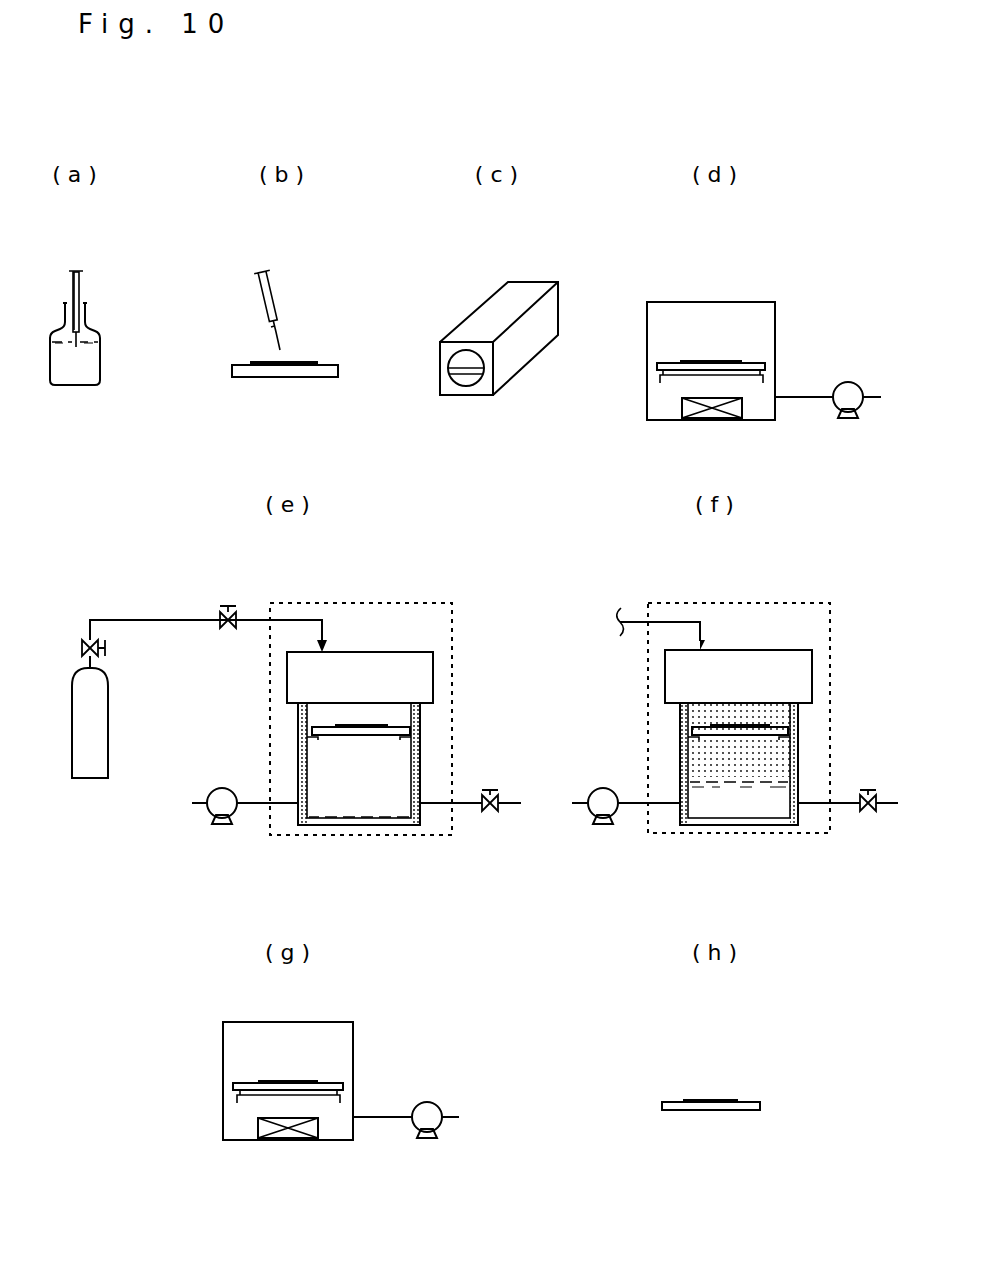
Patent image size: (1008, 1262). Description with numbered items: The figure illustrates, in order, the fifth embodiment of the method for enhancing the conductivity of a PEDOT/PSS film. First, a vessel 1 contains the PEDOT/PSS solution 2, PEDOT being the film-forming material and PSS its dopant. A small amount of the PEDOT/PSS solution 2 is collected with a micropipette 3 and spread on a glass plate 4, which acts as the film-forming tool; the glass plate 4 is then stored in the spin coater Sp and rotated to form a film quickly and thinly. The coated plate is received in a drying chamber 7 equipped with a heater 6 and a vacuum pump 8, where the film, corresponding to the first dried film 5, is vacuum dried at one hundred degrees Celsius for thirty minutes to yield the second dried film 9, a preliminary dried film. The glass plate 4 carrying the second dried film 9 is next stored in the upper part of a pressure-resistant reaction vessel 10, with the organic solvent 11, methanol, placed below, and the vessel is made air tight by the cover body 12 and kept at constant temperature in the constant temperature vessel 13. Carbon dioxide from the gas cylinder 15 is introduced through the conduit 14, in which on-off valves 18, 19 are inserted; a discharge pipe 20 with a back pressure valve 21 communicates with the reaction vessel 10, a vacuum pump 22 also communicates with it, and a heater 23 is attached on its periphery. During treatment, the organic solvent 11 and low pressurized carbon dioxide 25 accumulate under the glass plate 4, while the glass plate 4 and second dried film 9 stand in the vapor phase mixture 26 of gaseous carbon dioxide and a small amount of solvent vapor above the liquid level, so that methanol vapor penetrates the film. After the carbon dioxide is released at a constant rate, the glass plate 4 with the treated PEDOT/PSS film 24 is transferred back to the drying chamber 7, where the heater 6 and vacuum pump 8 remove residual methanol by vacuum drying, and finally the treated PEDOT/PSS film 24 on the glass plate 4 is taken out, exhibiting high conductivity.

The vessel 1 is at (95, 322).
The PEDOT/PSS solution 2 is at (90, 367).
The micropipette 3 is at (80, 284).
The glass plate 4 is at (245, 365).
The first dried film 5 is at (720, 360).
The heater 6 is at (690, 408).
The drying chamber 7 is at (765, 327).
The vacuum pump 8 is at (850, 390).
The second dried film 9 is at (360, 724).
The pressure-resistant reaction vessel 10 is at (315, 760).
The organic solvent 11 is at (342, 817).
The cover body 12 is at (420, 677).
The constant temperature vessel 13 is at (453, 617).
The conduit 14 is at (145, 620).
The gas cylinder 15 is at (83, 722).
The on-off valve 18 is at (80, 648).
The on-off valve 19 is at (232, 607).
The discharge pipe 20 is at (465, 808).
The back pressure valve 21 is at (493, 790).
The vacuum pump 22 is at (220, 797).
The heater 23 is at (300, 728).
The treated PEDOT/PSS film 24 is at (298, 1080).
The low pressurized carbon dioxide 25 is at (765, 792).
The vapor phase mixture 26 is at (775, 716).
The spin coater Sp is at (487, 315).